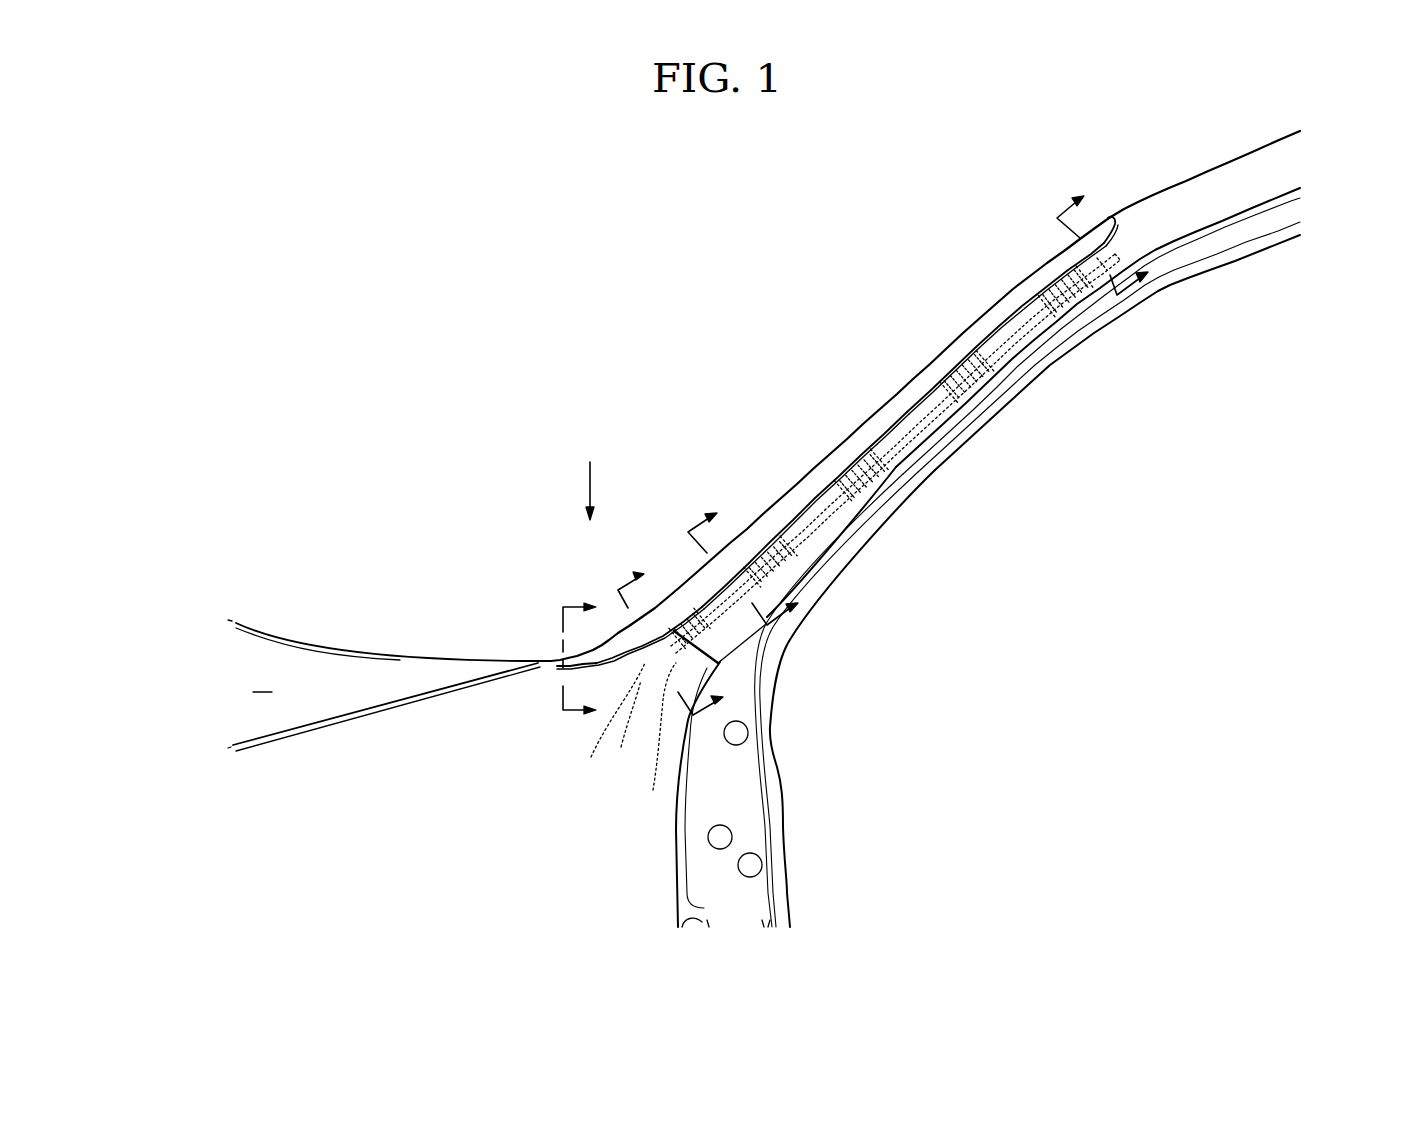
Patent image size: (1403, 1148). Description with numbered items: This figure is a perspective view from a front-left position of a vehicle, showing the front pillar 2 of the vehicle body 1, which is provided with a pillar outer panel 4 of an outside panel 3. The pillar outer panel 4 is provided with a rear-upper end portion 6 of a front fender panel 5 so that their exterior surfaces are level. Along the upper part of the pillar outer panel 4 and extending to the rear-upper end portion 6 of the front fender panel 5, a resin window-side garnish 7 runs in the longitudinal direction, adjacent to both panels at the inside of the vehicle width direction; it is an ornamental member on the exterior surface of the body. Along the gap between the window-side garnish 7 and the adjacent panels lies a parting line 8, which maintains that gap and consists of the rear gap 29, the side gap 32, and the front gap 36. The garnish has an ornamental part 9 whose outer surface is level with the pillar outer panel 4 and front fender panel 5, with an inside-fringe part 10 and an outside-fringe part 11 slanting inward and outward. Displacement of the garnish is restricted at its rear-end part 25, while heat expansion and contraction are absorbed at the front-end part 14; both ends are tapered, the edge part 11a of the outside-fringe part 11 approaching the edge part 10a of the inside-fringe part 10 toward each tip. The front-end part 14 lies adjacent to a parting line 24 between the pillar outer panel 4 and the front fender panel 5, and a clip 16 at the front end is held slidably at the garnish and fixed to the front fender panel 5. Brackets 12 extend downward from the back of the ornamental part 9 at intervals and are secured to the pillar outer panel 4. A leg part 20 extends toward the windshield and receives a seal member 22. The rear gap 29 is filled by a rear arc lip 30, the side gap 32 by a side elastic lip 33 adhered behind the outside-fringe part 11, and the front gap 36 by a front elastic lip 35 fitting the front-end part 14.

The vehicle body 1 is at (902, 208).
The front pillar 2 is at (905, 370).
The outside panel 3 is at (788, 798).
The pillar outer panel 4 is at (987, 374).
The front fender panel 5 is at (411, 822).
The rear-upper end portion 6 is at (699, 672).
The window-side garnish 7 is at (838, 458).
The parting line 8 is at (896, 453).
The ornamental part 9 is at (973, 335).
The inside-fringe part 10 is at (772, 505).
The edge part 10a is at (971, 374).
The outside-fringe part 11 is at (1086, 401).
The edge part 11a is at (873, 447).
The brackets 12 is at (1078, 335).
The front-end part 14 is at (617, 640).
The clip 16 is at (619, 730).
The leg part 20 is at (597, 723).
The seal member 22 is at (648, 743).
The parting line 24 is at (712, 648).
The rear-end part 25 is at (1105, 236).
The rear gap 29 is at (1172, 170).
The rear arc lip 30 is at (1117, 226).
The side gap 32 is at (896, 453).
The side elastic lip 33 is at (886, 434).
The front elastic lip 35 is at (575, 656).
The front gap 36 is at (548, 600).